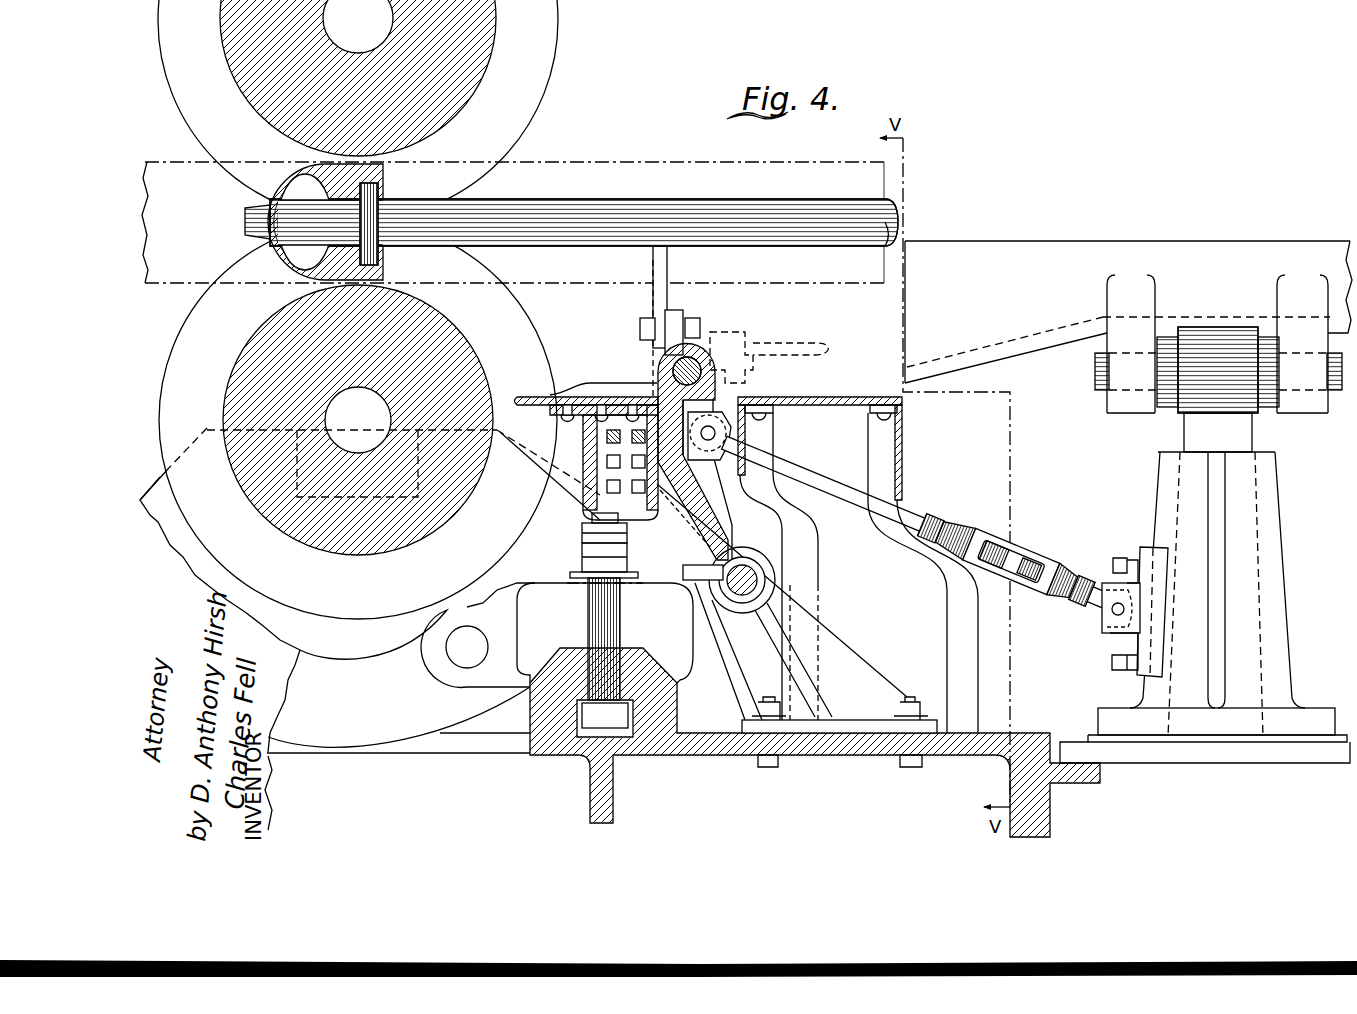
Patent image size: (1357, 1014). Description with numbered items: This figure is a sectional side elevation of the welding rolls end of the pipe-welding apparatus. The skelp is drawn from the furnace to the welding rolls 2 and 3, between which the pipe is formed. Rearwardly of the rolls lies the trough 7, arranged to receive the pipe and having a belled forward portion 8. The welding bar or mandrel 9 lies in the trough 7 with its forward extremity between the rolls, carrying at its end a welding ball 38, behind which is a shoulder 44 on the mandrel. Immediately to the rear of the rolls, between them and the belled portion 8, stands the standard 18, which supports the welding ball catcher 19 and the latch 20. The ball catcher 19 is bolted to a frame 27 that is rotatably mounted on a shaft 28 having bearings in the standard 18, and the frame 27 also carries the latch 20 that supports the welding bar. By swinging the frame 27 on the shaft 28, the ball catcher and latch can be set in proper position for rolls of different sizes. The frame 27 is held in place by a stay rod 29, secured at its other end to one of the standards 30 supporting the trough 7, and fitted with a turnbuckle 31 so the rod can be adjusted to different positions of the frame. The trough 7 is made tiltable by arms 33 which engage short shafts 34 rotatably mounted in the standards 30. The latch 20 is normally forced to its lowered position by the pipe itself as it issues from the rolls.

The welding roll 2 is at (497, 78).
The welding roll 3 is at (545, 337).
The trough 7 is at (1128, 313).
The belled forward portion 8 is at (1033, 355).
The welding bar or mandrel 9 is at (659, 197).
The standard 18 is at (853, 644).
The welding ball catcher 19 is at (598, 392).
The latch 20 is at (671, 263).
The frame 27 is at (653, 517).
The shaft 28 is at (760, 582).
The stay rod 29 is at (805, 471).
The standard 30 is at (1161, 482).
The turnbuckle 31 is at (691, 360).
The arm 33 is at (1302, 416).
The short shaft 34 is at (1334, 407).
The welding ball 38 is at (390, 168).
The shoulder 44 is at (380, 260).